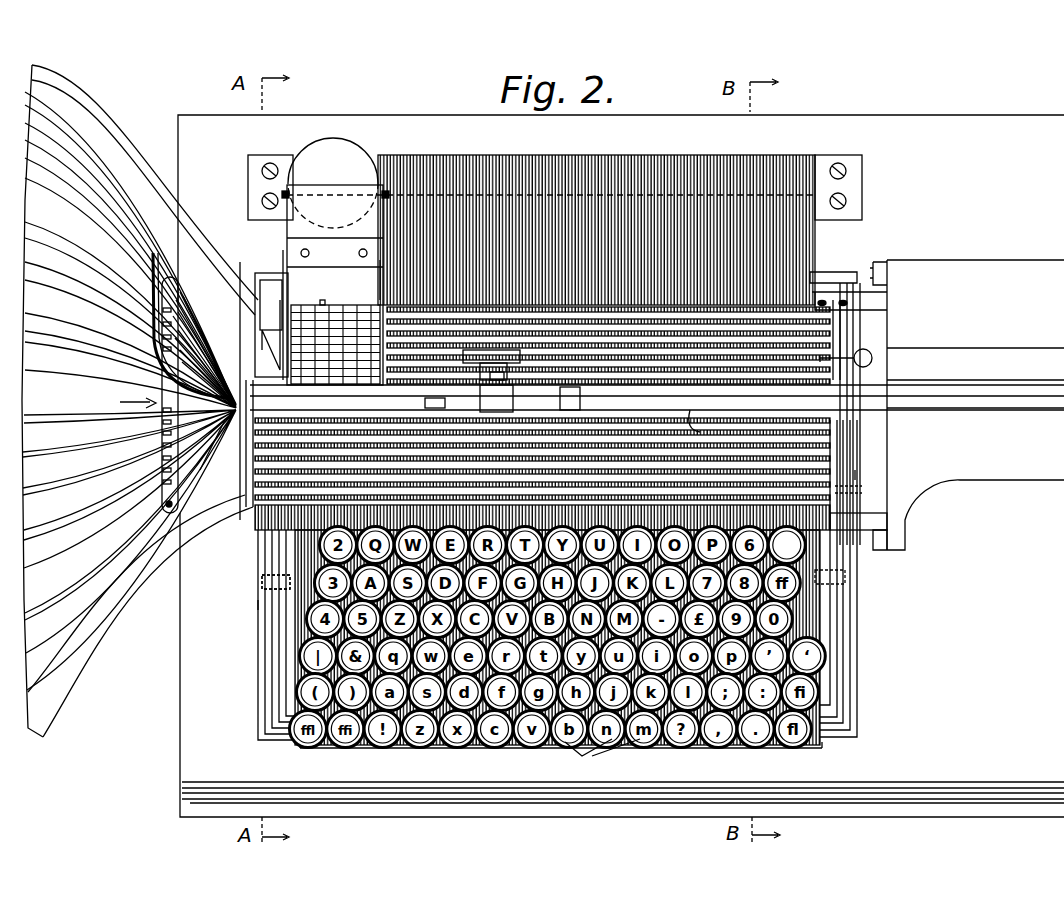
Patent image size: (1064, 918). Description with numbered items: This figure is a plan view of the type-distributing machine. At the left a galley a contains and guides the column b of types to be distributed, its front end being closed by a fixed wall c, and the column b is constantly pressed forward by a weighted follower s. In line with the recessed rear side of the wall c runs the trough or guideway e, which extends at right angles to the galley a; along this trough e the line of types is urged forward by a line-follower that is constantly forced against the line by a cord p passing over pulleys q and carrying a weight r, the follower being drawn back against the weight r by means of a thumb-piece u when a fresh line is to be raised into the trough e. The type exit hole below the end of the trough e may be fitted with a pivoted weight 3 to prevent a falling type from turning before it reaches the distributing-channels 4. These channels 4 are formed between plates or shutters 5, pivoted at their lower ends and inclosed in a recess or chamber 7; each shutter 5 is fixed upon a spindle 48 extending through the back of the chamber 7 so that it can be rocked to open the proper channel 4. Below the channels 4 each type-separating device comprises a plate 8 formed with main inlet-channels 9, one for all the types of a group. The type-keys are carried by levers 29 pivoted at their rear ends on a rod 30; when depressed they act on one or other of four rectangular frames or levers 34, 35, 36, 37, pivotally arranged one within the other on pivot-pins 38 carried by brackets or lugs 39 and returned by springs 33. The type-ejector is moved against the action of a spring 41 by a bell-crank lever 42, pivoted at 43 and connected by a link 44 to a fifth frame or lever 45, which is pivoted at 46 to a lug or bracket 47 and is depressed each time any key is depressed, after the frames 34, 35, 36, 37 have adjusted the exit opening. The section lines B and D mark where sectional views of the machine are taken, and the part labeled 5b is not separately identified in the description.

The levers 29 is at (592, 162).
The rod 30 is at (824, 165).
The pivoted weight 3 is at (160, 262).
The recess or chamber 7 is at (187, 300).
The spring 41 is at (246, 300).
The link 44 is at (252, 322).
The bell-crank lever 42 is at (252, 338).
The pivot 43 is at (238, 356).
The spindle 48 is at (122, 399).
The main inlet-channels 9 is at (95, 258).
The plate 8 is at (140, 616).
The plates or shutters 5 is at (208, 458).
The lug or bracket 47 is at (857, 482).
The brackets or lugs 39 is at (262, 578).
The pivot-pins 38 is at (262, 586).
The frame or lever 45 is at (258, 612).
The frame or lever 34 is at (320, 600).
The frame or lever 35 is at (320, 615).
The frame or lever 36 is at (320, 632).
The frame or lever 37 is at (265, 658).
The springs 33 is at (843, 596).
The pivot 46 is at (862, 492).
The distributing-channels 4 is at (602, 756).
The galley a is at (285, 272).
The column of types b is at (305, 305).
The fixed wall c is at (327, 294).
The weighted follower s is at (370, 280).
The thumb-piece u is at (490, 376).
The trough or guideway e is at (608, 361).
The cord p is at (665, 416).
The pulleys q is at (831, 342).
The weight r is at (864, 349).
The section line D D is at (238, 364).
The section line B B is at (435, 403).
The lever arm 5b is at (705, 411).